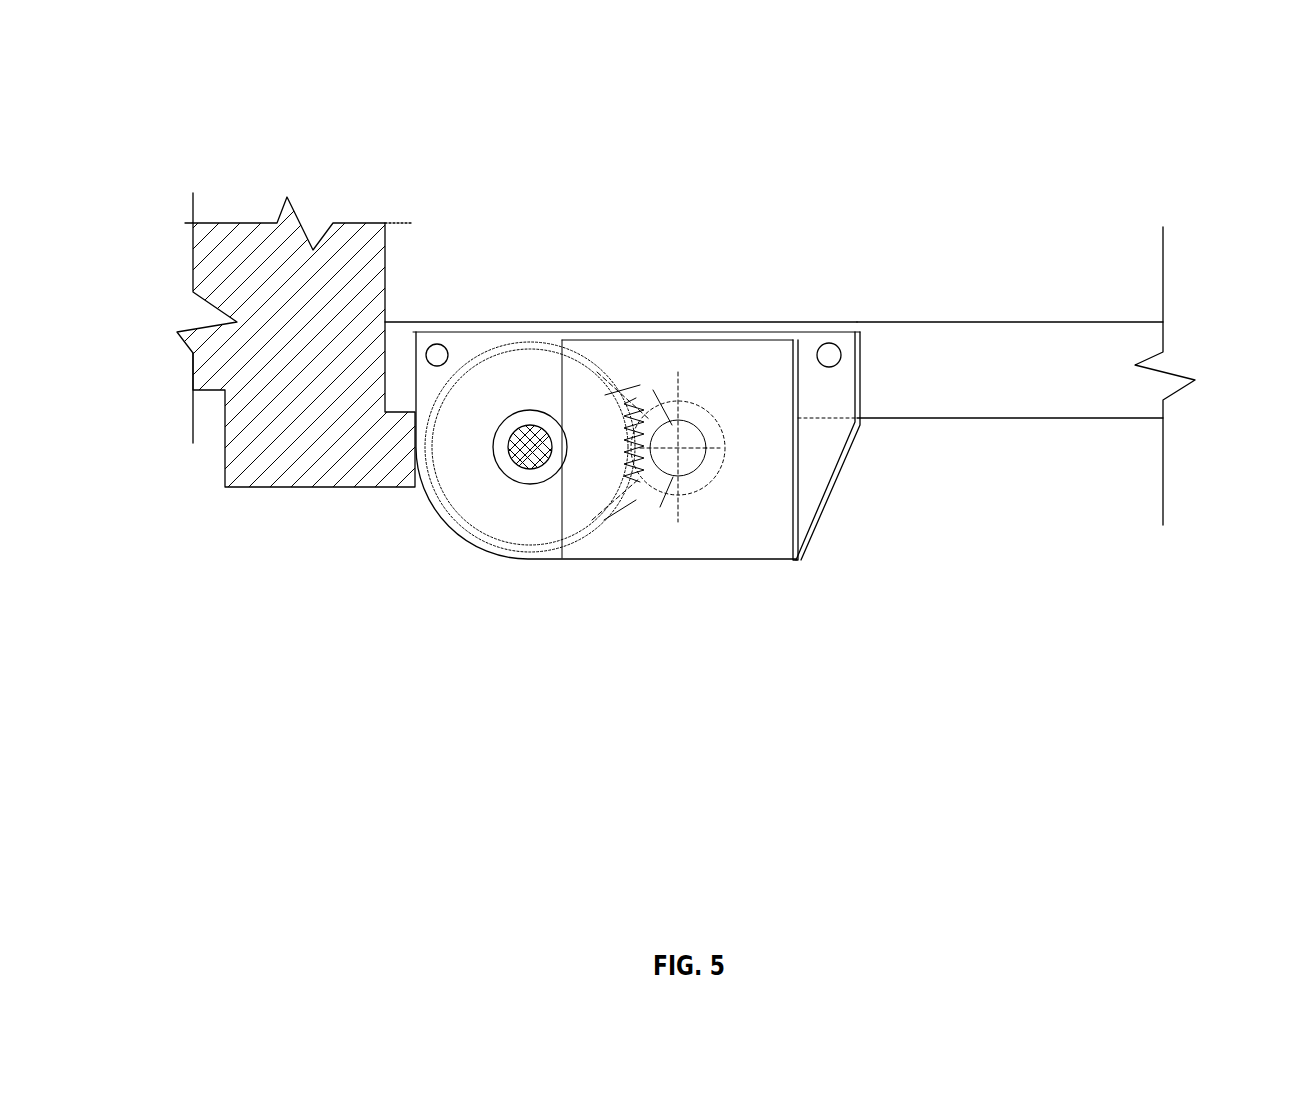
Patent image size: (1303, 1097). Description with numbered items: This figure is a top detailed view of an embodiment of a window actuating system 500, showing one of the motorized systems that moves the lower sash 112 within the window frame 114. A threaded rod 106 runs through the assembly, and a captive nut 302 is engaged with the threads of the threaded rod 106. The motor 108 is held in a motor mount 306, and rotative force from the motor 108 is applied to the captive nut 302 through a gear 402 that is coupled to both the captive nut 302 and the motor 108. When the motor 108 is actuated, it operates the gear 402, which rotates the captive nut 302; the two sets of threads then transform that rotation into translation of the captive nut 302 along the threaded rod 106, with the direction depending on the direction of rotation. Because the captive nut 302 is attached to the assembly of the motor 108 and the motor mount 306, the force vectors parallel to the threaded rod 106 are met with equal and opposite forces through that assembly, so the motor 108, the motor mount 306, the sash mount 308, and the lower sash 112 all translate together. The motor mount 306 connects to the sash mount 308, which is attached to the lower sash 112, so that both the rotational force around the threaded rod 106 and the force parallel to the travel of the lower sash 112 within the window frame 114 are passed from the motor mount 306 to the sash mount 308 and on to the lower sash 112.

The window actuating system 500 is at (1208, 118).
The window frame 114 is at (210, 375).
The lower sash 112 is at (983, 400).
The sash mount 308 is at (437, 355).
The captive nut 302 is at (495, 455).
The threaded rod 106 is at (525, 458).
The gear 402 is at (580, 513).
The motor 108 is at (757, 543).
The motor mount 306 is at (820, 472).